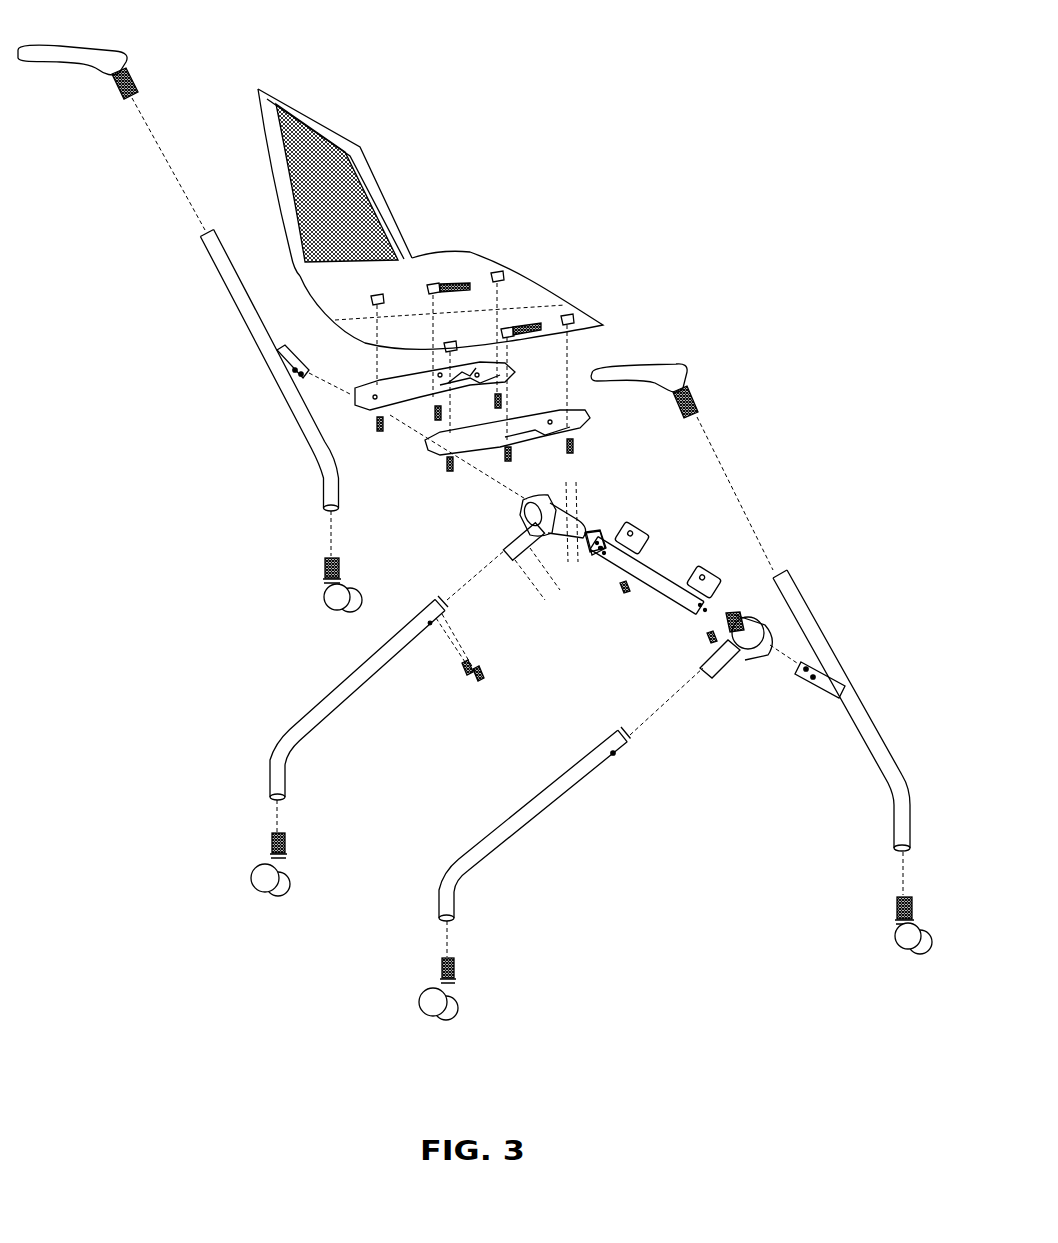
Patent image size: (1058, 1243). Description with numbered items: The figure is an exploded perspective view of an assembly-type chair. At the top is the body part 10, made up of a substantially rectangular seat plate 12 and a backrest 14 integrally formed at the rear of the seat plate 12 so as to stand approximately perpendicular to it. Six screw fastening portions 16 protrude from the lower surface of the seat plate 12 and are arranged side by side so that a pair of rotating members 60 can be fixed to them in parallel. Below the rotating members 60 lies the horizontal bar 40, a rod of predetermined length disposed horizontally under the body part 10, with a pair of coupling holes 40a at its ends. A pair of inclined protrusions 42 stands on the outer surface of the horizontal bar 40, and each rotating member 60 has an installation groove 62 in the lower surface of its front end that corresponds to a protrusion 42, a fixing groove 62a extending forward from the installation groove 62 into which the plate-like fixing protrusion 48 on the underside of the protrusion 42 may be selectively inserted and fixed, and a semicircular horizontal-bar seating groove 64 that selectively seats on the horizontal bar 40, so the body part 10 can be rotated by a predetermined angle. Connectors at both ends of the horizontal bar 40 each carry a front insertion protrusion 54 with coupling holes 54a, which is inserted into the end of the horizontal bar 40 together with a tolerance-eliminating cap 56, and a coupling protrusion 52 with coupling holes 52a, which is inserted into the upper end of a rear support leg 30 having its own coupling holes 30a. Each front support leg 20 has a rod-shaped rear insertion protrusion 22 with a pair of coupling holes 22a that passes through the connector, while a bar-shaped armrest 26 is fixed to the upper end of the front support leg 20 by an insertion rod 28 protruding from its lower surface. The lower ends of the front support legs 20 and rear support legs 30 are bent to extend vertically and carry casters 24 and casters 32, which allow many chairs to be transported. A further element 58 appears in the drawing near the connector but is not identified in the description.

The body part 10 is at (430, 220).
The seat plate 12 is at (423, 252).
The backrest 14 is at (372, 167).
The screw fastening portions 16 is at (430, 290).
The front support legs 20 is at (242, 322).
The rear insertion protrusion 22 is at (290, 348).
The coupling holes 22a is at (287, 376).
The caster 24 is at (325, 578).
The armrests 26 is at (95, 48).
The insertion rod 28 is at (696, 402).
The rear support legs 30 is at (332, 690).
The coupling holes 30a is at (614, 752).
The caster 32 is at (450, 1003).
The horizontal bar 40 is at (664, 560).
The coupling holes 40a is at (693, 614).
The protrusions 42 is at (645, 530).
The fixing protrusion 48 is at (716, 583).
The coupling protrusion 52 is at (512, 535).
The coupling holes 52a is at (528, 560).
The front insertion protrusion 54 is at (573, 548).
The coupling holes 54a is at (588, 535).
The cap 56 is at (575, 505).
The hub opening 58 is at (533, 497).
The rotating members 60 is at (575, 400).
The installation groove 62 is at (583, 428).
The fixing groove 62a is at (500, 388).
The horizontal-bar seating groove 64 is at (513, 450).